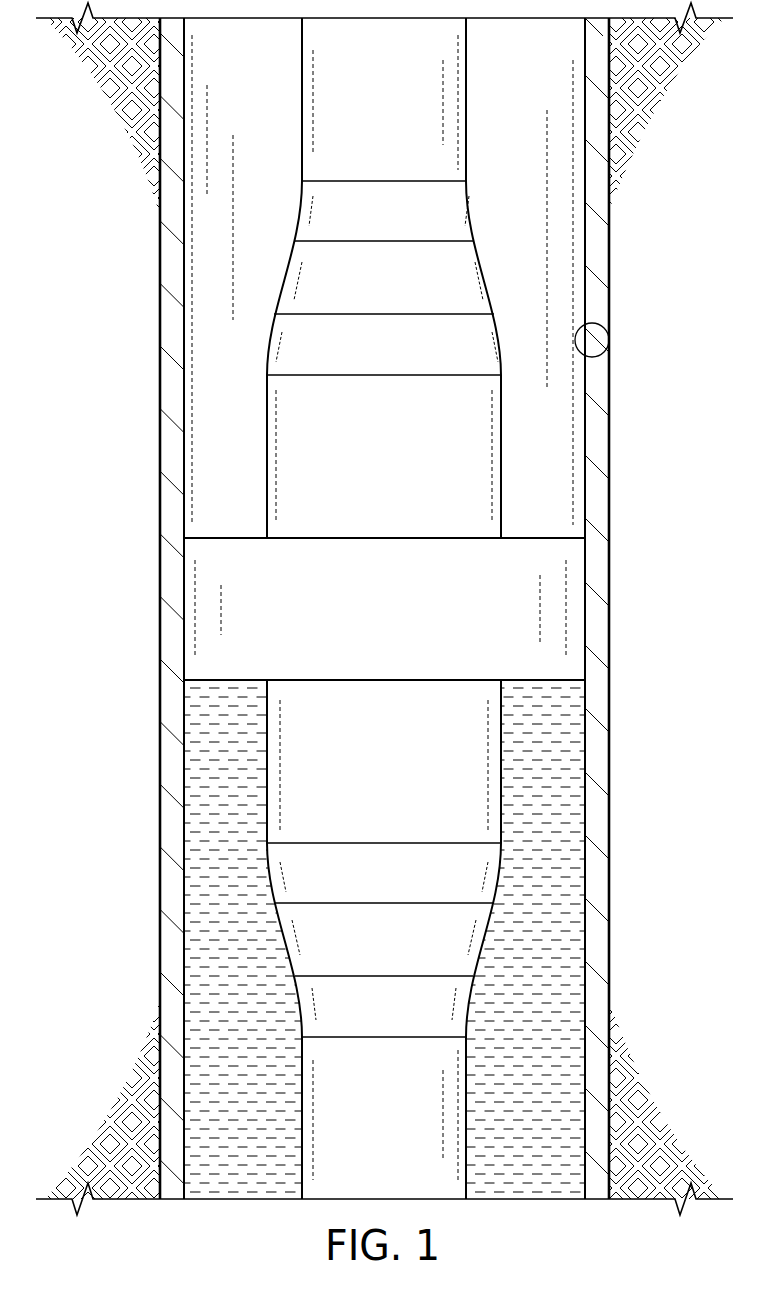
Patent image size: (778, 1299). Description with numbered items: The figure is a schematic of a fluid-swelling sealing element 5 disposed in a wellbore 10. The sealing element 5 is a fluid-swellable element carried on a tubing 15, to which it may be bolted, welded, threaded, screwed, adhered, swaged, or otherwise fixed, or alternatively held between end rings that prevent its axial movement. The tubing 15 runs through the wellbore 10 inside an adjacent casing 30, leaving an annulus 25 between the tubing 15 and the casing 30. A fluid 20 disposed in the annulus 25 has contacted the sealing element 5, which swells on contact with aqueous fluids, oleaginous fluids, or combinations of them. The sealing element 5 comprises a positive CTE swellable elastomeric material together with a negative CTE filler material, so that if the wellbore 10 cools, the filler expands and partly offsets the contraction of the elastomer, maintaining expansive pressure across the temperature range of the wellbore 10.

The sealing element 5 is at (527, 538).
The wellbore 10 is at (609, 362).
The tubing 15 is at (302, 96).
The fluid 20 is at (578, 807).
The annulus 25 is at (570, 432).
The casing 30 is at (168, 317).